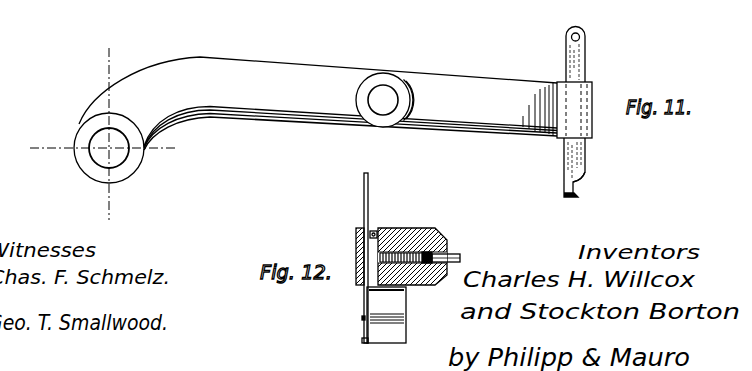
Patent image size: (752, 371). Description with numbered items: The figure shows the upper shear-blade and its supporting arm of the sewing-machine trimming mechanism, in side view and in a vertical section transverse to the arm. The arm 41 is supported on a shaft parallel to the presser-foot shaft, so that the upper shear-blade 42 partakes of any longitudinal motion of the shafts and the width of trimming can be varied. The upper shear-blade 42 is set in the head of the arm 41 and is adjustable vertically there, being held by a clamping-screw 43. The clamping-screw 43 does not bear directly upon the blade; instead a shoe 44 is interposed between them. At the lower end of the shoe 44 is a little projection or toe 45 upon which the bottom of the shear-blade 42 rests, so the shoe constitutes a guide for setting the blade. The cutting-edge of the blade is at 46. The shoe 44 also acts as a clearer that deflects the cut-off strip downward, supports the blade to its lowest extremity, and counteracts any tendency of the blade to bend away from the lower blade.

In FIG. 11, the arm 41 is at (467, 118).
In FIG. 11, the upper shear-blade 42 is at (570, 154).
In FIG. 12, the upper shear-blade 42 is at (362, 332).
In FIG. 12, the clamping-screw 43 is at (458, 253).
In FIG. 12, the shoe 44 is at (397, 300).
In FIG. 11, the toe 45 is at (565, 197).
In FIG. 12, the toe 45 is at (365, 343).
In FIG. 11, the cutting-edge 46 is at (581, 177).
In FIG. 12, the cutting-edge 46 is at (362, 318).